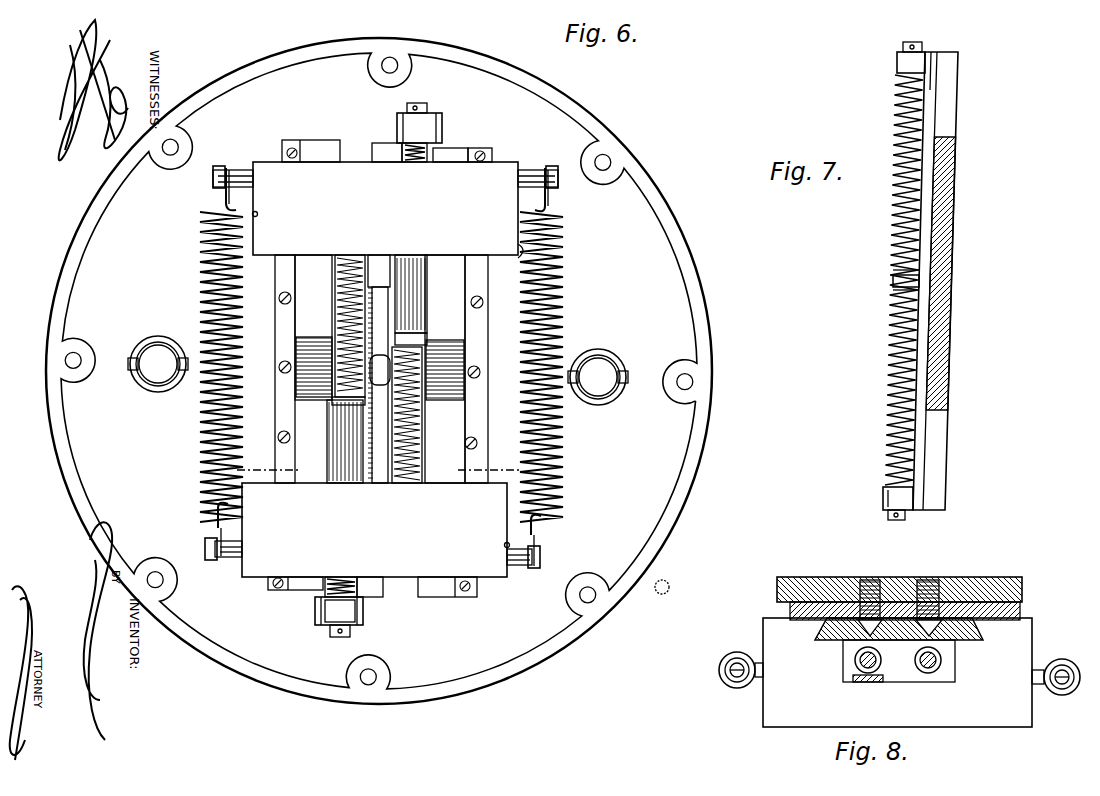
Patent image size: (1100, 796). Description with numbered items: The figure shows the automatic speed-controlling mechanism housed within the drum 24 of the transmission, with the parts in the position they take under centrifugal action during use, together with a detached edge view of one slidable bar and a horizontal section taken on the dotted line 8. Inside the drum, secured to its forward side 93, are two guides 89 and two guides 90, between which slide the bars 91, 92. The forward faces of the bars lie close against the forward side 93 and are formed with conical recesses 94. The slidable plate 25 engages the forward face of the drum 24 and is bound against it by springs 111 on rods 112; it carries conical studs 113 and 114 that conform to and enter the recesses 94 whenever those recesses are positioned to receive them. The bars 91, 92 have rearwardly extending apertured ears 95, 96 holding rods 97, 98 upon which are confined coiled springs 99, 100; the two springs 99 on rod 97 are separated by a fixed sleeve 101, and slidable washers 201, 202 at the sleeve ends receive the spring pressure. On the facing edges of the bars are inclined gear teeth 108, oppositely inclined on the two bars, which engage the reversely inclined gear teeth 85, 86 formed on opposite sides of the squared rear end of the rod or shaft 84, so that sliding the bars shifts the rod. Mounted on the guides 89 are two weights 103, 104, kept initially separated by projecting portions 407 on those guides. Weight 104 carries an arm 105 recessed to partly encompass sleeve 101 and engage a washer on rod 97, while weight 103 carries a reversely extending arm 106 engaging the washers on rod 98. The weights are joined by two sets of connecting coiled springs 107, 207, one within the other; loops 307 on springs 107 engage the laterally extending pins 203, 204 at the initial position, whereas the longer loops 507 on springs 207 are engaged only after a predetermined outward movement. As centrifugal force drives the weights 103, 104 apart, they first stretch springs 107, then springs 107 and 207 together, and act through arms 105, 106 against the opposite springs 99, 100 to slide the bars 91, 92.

In FIG. 6, the section line 8 is at (378, 460).
In FIG. 6, the drum 24 is at (665, 580).
In FIG. 8, the drum 24 is at (1020, 612).
In FIG. 8, the slidable plate 25 is at (800, 577).
In FIG. 6, the rod or shaft 84 is at (335, 428).
In FIG. 6, the inclined gear teeth 85 is at (300, 380).
In FIG. 6, the inclined gear teeth 86 is at (462, 370).
In FIG. 6, the guide 89 is at (310, 140).
In FIG. 6, the guide 90 is at (385, 143).
In FIG. 6, the slidable bar 91 is at (318, 612).
In FIG. 7, the slidable bar 91 is at (946, 435).
In FIG. 6, the slidable bar 92 is at (442, 130).
In FIG. 8, the slidable bar 92 is at (940, 618).
In FIG. 6, the forward side of the drum 93 is at (379, 371).
In FIG. 8, the conical recess 94 is at (900, 645).
In FIG. 6, the apertured ear 95 is at (338, 615).
In FIG. 7, the apertured ear 95 is at (897, 60).
In FIG. 6, the apertured ear 96 is at (427, 112).
In FIG. 6, the rod 97 is at (350, 632).
In FIG. 7, the rod 97 is at (920, 42).
In FIG. 6, the rod 98 is at (418, 105).
In FIG. 6, the coiled spring 99 is at (340, 286).
In FIG. 7, the coiled spring 99 is at (893, 205).
In FIG. 8, the coiled spring 99 is at (855, 660).
In FIG. 6, the coiled spring 100 is at (440, 158).
In FIG. 8, the coiled spring 100 is at (928, 673).
In FIG. 7, the fixed sleeve 101 is at (893, 280).
In FIG. 6, the weight 103 is at (385, 208).
In FIG. 6, the weight 104 is at (374, 530).
In FIG. 8, the weight 104 is at (897, 672).
In FIG. 6, the arm 105 is at (348, 483).
In FIG. 8, the arm 105 is at (868, 682).
In FIG. 6, the arm 106 is at (420, 262).
In FIG. 6, the connecting coiled spring 107 is at (200, 240).
In FIG. 8, the connecting coiled spring 107 is at (719, 669).
In FIG. 6, the inclined gear teeth 108 is at (428, 338).
In FIG. 7, the inclined gear teeth 108 is at (950, 300).
In FIG. 6, the spring 111 is at (150, 388).
In FIG. 6, the rod 112 is at (378, 370).
In FIG. 8, the conical stud 113 is at (868, 580).
In FIG. 8, the conical stud 114 is at (926, 580).
In FIG. 7, the washer 201 is at (893, 272).
In FIG. 7, the washer 202 is at (895, 289).
In FIG. 6, the pin 203 is at (213, 178).
In FIG. 6, the pin 204 is at (205, 548).
In FIG. 6, the connecting coiled spring 207 is at (254, 215).
In FIG. 8, the connecting coiled spring 207 is at (740, 652).
In FIG. 6, the loop 307 is at (222, 195).
In FIG. 6, the projecting portion 407 is at (462, 386).
In FIG. 6, the loop 507 is at (230, 166).